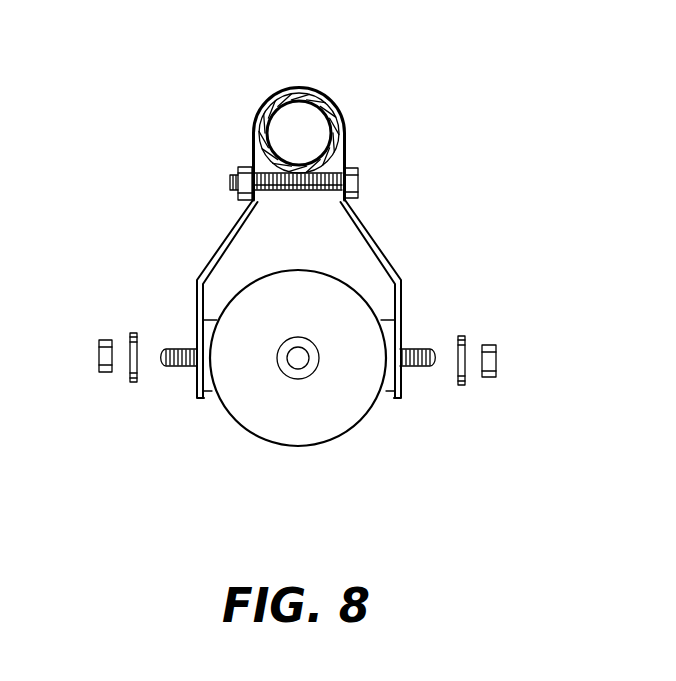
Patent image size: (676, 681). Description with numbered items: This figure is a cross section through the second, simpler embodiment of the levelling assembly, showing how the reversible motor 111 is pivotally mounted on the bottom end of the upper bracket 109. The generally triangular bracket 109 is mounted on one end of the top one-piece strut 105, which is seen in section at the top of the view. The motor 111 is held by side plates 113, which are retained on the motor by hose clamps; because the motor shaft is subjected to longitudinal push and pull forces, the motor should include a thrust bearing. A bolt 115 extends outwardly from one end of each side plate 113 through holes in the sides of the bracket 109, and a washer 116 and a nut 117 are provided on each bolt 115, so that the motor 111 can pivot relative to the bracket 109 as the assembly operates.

The top one-piece strut 105 is at (275, 92).
The upper bracket 109 is at (330, 90).
The reversible motor 111 is at (317, 318).
The side plate 113 is at (383, 392).
The bolt 115 is at (165, 363).
The washer 116 is at (132, 333).
The nut 117 is at (105, 373).